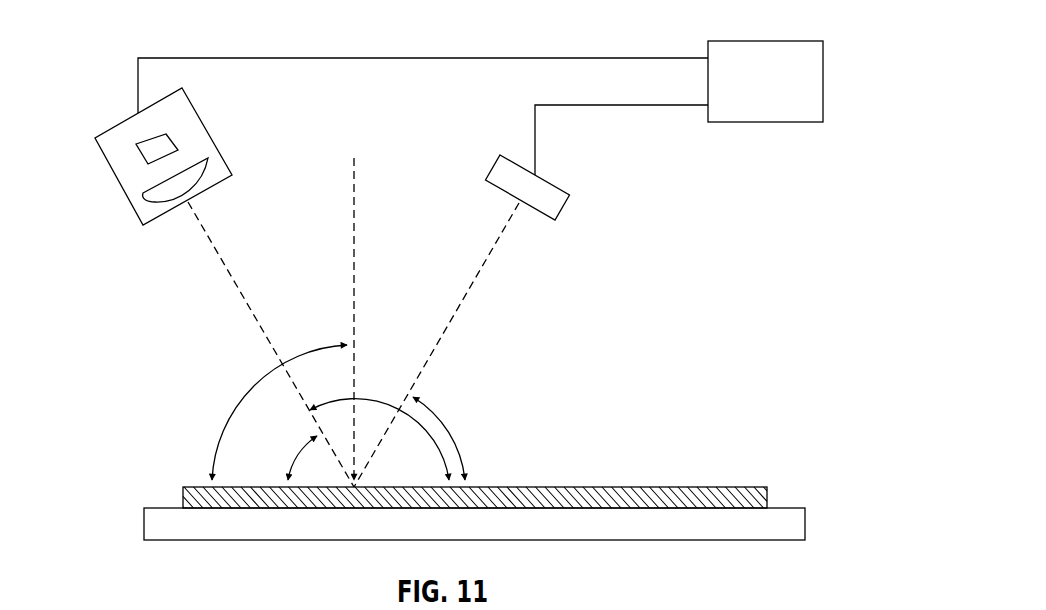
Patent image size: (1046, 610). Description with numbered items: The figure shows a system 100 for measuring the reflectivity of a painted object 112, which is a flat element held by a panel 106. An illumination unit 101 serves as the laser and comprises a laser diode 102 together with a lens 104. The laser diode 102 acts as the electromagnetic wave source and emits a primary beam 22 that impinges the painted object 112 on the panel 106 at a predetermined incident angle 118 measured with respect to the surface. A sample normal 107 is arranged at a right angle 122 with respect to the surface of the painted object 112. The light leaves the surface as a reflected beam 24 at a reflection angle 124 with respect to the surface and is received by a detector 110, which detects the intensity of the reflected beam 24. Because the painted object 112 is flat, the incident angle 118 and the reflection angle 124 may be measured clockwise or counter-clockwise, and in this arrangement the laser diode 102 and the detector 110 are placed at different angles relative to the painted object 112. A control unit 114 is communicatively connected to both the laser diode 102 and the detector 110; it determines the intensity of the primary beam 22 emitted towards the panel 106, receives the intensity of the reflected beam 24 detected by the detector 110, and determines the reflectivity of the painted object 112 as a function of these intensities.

The system 100 is at (129, 44).
The illumination unit 101 is at (120, 182).
The laser diode 102 is at (158, 143).
The lens 104 is at (198, 173).
The primary beam 22 is at (230, 273).
The reflected beam 24 is at (470, 287).
The sample normal 107 is at (419, 313).
The detector 110 is at (555, 183).
The control unit 114 is at (795, 123).
The right angle 122 is at (245, 393).
The incident angle 118 is at (300, 448).
The reflection angle 124 is at (457, 435).
The painted object 112 is at (730, 487).
The panel 106 is at (797, 508).